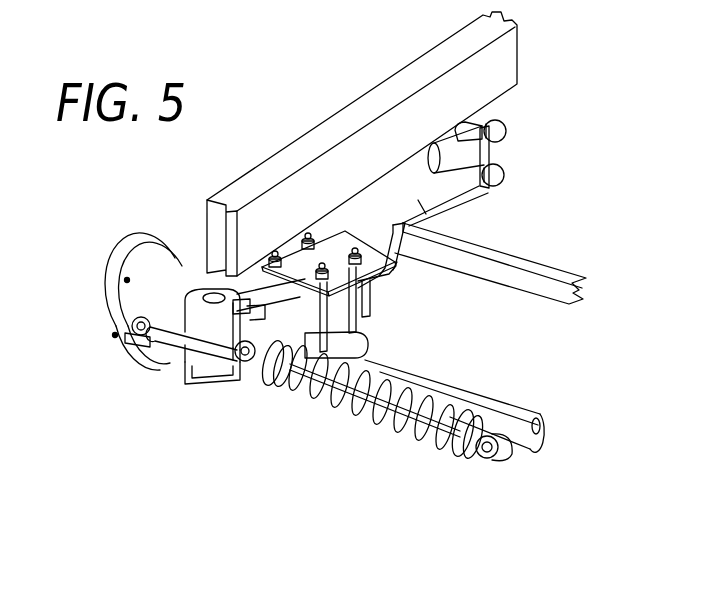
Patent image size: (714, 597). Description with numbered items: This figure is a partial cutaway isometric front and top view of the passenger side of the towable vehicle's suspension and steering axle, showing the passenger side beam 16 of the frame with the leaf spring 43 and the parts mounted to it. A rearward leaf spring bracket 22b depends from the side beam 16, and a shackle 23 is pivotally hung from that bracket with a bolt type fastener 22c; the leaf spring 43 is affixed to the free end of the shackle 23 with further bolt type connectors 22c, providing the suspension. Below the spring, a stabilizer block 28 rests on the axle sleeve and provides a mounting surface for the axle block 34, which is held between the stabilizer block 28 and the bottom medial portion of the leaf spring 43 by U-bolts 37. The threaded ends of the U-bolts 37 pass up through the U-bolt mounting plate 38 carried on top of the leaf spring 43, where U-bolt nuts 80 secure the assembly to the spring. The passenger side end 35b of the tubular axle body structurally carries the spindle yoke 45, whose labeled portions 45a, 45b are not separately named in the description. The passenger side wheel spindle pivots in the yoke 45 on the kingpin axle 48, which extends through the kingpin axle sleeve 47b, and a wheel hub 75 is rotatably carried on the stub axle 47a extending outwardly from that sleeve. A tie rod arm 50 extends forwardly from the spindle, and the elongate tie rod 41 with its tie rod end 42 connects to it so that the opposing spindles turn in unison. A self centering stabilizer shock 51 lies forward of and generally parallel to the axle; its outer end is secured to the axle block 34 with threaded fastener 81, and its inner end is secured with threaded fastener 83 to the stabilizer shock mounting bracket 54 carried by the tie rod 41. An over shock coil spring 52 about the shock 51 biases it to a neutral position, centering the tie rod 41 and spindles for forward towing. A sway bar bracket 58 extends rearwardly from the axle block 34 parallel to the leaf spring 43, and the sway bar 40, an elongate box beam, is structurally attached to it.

The passenger side beam 16 is at (392, 95).
The leaf spring 43 is at (422, 208).
The rearward leaf spring bracket 22b is at (490, 113).
The bolt type fastener 22c is at (498, 124).
The shackle 23 is at (488, 144).
The sway bar 40 is at (515, 270).
The U-bolt 37 is at (337, 317).
The sway bar bracket 58 is at (396, 272).
The axle block 34 is at (355, 336).
The stabilizer block 28 is at (360, 348).
The passenger side end 35b is at (447, 393).
The stabilizer shock mounting bracket 54 is at (511, 452).
The threaded fastener 83 is at (481, 453).
The over shock coil spring 52 is at (391, 420).
The self centering stabilizer shock 51 is at (313, 386).
The spindle yoke 45 is at (246, 390).
The threaded fastener 81 is at (248, 367).
The lower yoke arm 45b is at (210, 378).
The kingpin axle sleeve 47b is at (197, 357).
The tie rod 41 is at (140, 366).
The tie rod arm 50 is at (132, 336).
The tie rod end 42 is at (142, 320).
The wheel hub 75 is at (150, 318).
The stub axle 47a is at (183, 315).
The upper yoke arm 45a is at (197, 300).
The kingpin axle 48 is at (212, 291).
The U-bolt mounting plate 38 is at (298, 262).
The U-bolt nut 80 is at (352, 257).